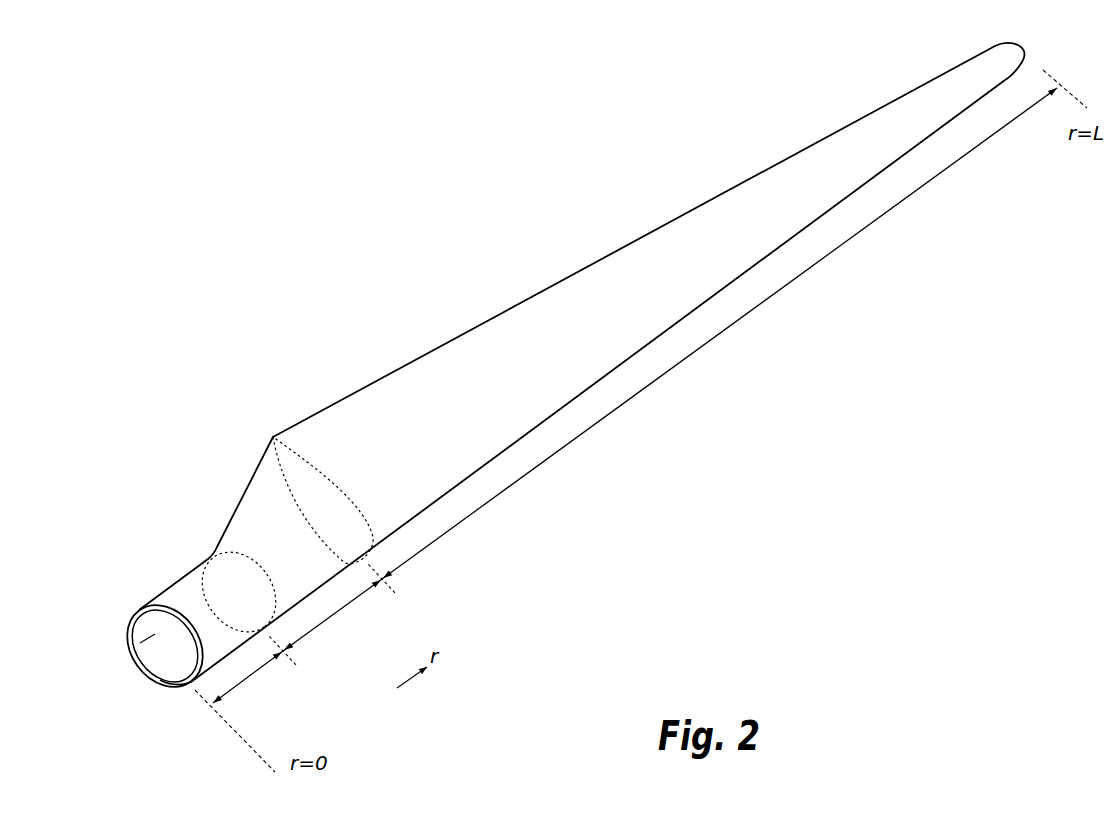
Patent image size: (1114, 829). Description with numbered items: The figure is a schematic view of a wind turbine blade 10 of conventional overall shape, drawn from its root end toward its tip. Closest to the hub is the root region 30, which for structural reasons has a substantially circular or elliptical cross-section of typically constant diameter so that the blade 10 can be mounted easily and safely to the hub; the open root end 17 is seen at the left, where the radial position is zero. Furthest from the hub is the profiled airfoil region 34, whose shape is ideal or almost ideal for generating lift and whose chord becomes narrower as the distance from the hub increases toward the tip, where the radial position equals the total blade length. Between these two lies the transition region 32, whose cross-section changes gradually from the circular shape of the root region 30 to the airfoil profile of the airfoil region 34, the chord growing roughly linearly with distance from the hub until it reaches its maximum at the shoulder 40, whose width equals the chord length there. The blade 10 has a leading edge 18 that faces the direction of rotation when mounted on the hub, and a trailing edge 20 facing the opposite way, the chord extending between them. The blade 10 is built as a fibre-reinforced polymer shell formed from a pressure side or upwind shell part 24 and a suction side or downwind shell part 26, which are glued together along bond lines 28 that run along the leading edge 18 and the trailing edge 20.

The wind turbine blade 10 is at (594, 407).
The root end 17 is at (133, 647).
The leading edge 18 is at (750, 268).
The trailing edge 20 is at (635, 240).
The pressure side or upwind shell part 24 is at (150, 605).
The suction side or downwind shell part 26 is at (182, 683).
The bond lines 28 is at (147, 604).
The root region 30 is at (252, 675).
The transition region 32 is at (338, 610).
The airfoil region 34 is at (653, 382).
The shoulder 40 is at (273, 437).